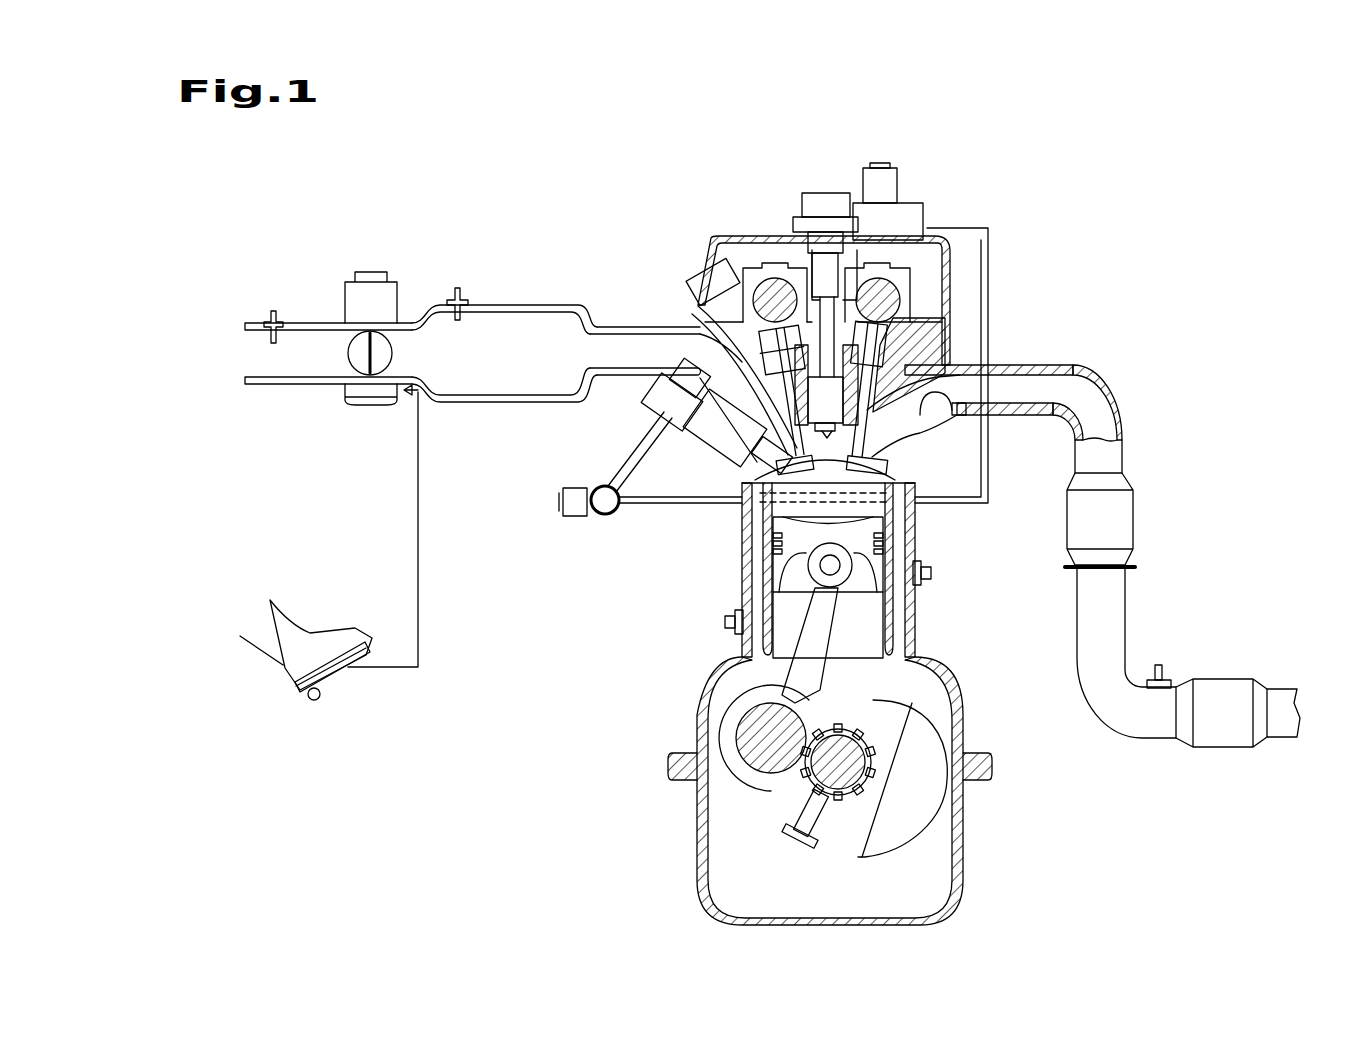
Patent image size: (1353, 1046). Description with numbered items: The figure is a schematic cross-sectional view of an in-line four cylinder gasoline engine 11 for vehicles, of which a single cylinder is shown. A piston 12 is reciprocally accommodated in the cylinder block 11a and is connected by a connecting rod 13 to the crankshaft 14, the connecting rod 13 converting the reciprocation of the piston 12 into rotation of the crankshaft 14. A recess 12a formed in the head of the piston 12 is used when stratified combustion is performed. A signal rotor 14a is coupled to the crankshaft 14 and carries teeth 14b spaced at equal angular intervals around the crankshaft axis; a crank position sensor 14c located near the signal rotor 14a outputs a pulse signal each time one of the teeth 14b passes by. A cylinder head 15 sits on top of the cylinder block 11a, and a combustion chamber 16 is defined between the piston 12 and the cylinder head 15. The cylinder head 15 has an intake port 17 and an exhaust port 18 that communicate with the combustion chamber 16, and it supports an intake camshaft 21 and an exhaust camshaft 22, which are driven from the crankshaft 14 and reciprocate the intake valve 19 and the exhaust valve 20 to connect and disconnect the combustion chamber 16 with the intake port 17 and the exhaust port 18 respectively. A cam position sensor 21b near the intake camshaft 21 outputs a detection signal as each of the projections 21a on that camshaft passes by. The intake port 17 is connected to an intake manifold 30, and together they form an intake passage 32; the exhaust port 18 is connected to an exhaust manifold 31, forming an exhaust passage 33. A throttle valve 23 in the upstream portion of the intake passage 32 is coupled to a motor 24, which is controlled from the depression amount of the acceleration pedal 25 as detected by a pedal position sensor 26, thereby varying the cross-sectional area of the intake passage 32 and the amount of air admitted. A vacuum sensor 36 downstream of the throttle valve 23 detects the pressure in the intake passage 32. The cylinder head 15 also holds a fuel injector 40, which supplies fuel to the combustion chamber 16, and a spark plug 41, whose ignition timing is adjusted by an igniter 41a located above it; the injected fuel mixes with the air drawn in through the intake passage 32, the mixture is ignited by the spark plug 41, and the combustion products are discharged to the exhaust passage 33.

The engine 11 is at (1091, 177).
The cylinder block 11a is at (916, 615).
The piston 12 is at (852, 595).
The recess 12a is at (778, 590).
The connecting rod 13 is at (820, 680).
The crankshaft 14 is at (868, 802).
The signal rotor 14a is at (840, 850).
The teeth 14b is at (878, 768).
The crank position sensor 14c is at (795, 833).
The cylinder head 15 is at (927, 440).
The combustion chamber 16 is at (745, 520).
The intake port 17 is at (642, 427).
The exhaust port 18 is at (965, 420).
The intake valve 19 is at (740, 483).
The exhaust valve 20 is at (907, 497).
The intake camshaft 21 is at (768, 262).
The projections 21a is at (724, 262).
The cam position sensor 21b is at (696, 272).
The exhaust camshaft 22 is at (920, 232).
The throttle valve 23 is at (393, 352).
The motor 24 is at (397, 285).
The acceleration pedal 25 is at (335, 683).
The pedal position sensor 26 is at (372, 406).
The intake manifold 30 is at (571, 305).
The exhaust manifold 31 is at (1085, 365).
The intake passage 32 is at (580, 372).
The exhaust passage 33 is at (1037, 405).
The vacuum sensor 36 is at (460, 288).
The fuel injector 40 is at (650, 388).
The spark plug 41 is at (830, 482).
The igniter 41a is at (803, 195).